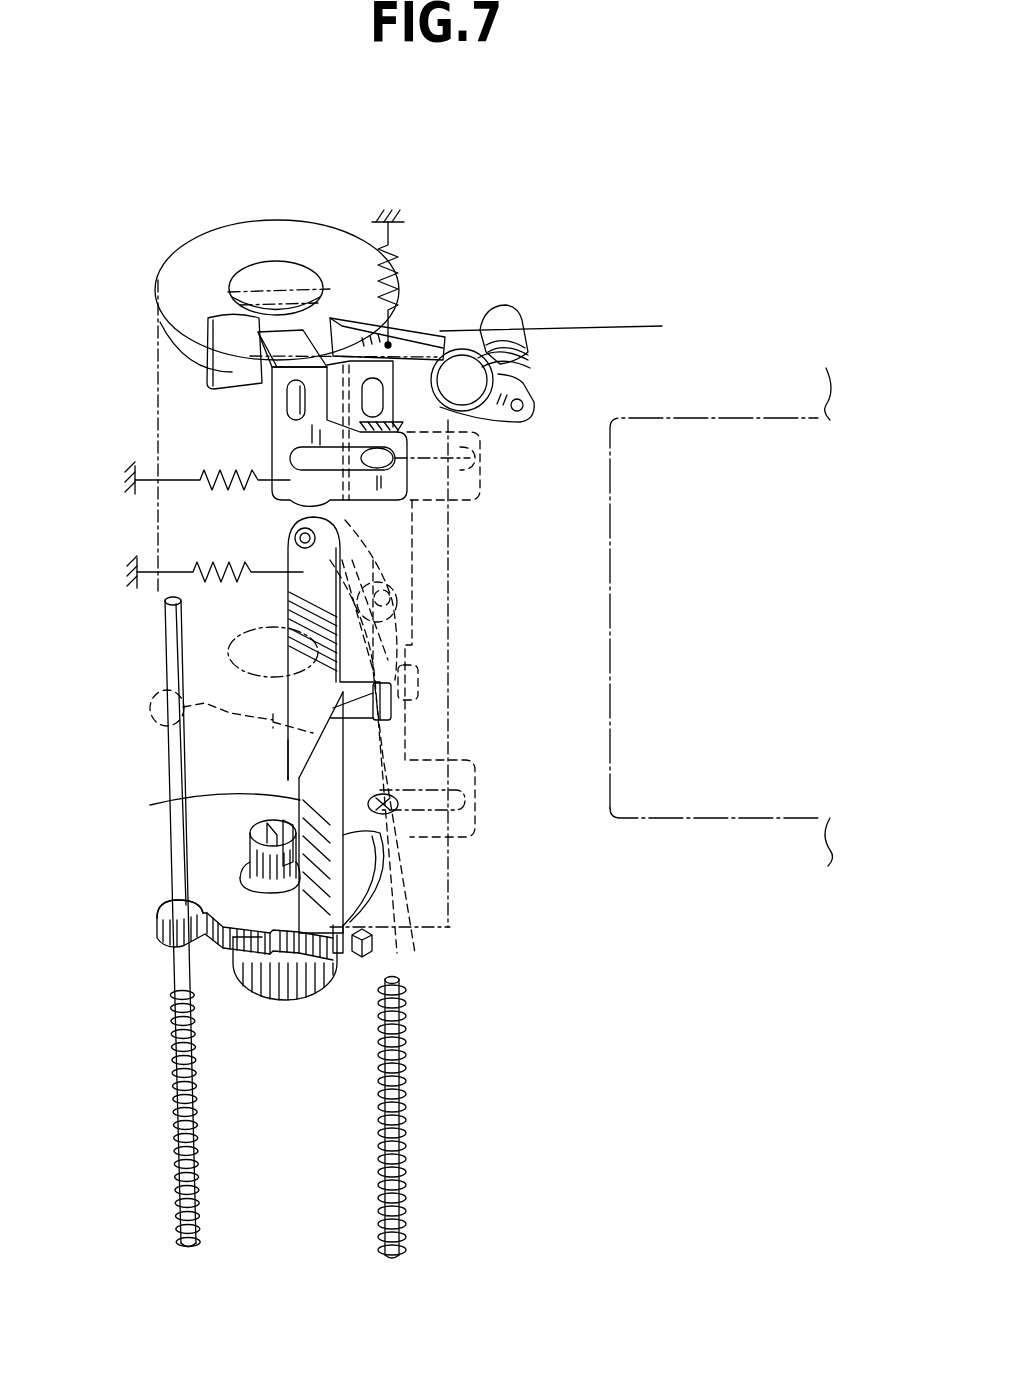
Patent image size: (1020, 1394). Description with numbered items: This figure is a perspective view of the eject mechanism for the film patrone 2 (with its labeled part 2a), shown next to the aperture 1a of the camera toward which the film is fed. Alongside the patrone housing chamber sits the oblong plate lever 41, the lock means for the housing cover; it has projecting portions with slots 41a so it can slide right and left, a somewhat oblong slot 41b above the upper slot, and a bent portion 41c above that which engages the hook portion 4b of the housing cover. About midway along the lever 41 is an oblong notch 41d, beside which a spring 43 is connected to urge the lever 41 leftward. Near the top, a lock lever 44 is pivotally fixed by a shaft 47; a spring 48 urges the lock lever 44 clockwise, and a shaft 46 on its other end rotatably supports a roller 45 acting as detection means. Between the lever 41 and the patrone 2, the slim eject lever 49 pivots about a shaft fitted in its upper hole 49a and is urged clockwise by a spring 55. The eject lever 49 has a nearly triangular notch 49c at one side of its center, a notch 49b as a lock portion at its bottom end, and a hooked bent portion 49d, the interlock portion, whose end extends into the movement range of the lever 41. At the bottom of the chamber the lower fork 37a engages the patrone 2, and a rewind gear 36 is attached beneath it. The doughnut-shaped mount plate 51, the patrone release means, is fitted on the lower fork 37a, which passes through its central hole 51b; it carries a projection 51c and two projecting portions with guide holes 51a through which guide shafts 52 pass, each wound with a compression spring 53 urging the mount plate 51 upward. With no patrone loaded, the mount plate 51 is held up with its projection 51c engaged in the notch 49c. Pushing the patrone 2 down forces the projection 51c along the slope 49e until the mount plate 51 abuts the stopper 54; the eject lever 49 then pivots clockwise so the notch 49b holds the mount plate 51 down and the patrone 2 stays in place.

The aperture 1a is at (712, 418).
The film patrone 2 is at (246, 222).
The knob shaft 2a is at (262, 297).
The hook portion 4b is at (223, 368).
The rewind gear 36 is at (290, 1003).
The lower fork 37a is at (253, 830).
The lever 41 is at (303, 433).
The slots 41a is at (290, 457).
The oblong slot 41b is at (290, 402).
The bent portion 41c is at (303, 330).
The oblong notch 41d is at (405, 657).
The spring 43 is at (240, 478).
The lock lever 44 is at (403, 347).
The roller 45 is at (503, 323).
The shaft 46 is at (522, 353).
The shaft 47 is at (460, 377).
The spring 48 is at (392, 268).
The eject lever 49 is at (283, 700).
The upper hole 49a is at (292, 535).
The notch 49b is at (340, 983).
The notch 49c is at (312, 752).
The hooked bent portion 49d is at (391, 710).
The slope 49e is at (297, 778).
The mount plate 51 is at (207, 630).
The guide hole 51a is at (160, 920).
The hole 51b is at (243, 860).
The projection 51c is at (283, 975).
The guide shafts 52 is at (392, 1240).
The compression spring 53 is at (177, 1143).
The stopper 54 is at (372, 950).
The spring 55 is at (273, 585).